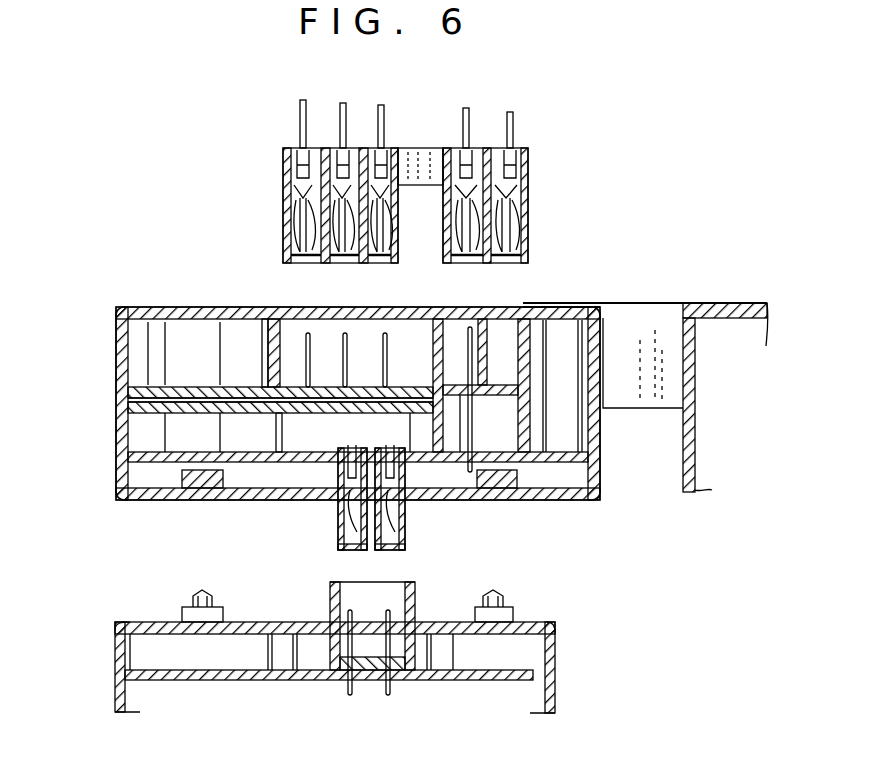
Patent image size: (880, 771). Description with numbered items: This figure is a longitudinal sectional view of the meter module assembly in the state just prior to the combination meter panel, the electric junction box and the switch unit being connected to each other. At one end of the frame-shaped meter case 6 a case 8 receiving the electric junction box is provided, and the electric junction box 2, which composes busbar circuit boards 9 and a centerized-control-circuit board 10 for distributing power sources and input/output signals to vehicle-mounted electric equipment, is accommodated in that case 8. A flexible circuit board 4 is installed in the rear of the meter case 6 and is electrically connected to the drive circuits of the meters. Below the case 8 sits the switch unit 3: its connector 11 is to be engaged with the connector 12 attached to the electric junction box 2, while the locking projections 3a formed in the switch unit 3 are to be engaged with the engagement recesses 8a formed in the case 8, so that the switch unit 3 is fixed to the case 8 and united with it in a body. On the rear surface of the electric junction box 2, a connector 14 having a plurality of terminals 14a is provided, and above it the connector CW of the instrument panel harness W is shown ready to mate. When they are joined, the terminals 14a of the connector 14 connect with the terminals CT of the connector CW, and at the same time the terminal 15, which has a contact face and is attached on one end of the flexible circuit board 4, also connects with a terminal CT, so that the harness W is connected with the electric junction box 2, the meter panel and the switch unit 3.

The instrument panel harness W is at (467, 122).
The connector CW is at (284, 190).
The terminals CT is at (505, 268).
The case receiving the electric junction box 8 is at (178, 307).
The terminals 14a is at (268, 318).
The connector 14 is at (305, 343).
The terminal 15 is at (503, 350).
The flexible circuit board 4 is at (645, 303).
The electric junction box 2 is at (57, 462).
The busbar circuit boards 9 is at (130, 395).
The centerized-control-circuit board 10 is at (128, 450).
The engagement recess 8a is at (190, 492).
The connector 12 is at (340, 512).
The meter case 6 is at (682, 452).
The switch unit 3 is at (108, 667).
The locking projection 3a is at (190, 602).
The connector 11 is at (330, 600).